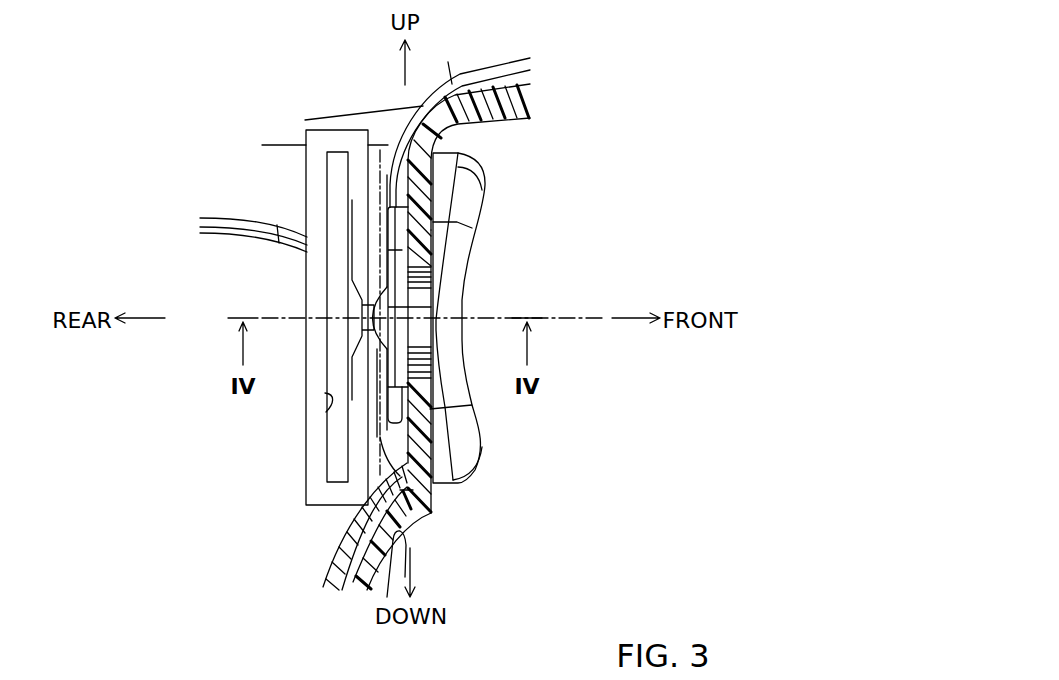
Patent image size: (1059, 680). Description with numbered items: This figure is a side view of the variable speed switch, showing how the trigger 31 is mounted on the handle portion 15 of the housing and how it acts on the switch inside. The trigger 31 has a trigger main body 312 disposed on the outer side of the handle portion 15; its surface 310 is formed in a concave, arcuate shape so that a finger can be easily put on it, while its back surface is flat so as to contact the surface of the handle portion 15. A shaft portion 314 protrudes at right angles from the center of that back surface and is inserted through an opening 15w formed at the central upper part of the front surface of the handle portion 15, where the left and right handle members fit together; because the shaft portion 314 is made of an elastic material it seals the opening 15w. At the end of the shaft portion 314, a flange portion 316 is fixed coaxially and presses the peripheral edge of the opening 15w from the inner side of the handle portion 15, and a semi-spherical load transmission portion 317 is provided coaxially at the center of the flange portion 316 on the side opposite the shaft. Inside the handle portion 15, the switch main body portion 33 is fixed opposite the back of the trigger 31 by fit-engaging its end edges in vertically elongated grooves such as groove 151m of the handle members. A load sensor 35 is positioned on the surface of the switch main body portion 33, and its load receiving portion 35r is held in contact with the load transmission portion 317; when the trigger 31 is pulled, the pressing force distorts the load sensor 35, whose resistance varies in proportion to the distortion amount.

The handle portion 15 is at (324, 601).
The opening 15w is at (433, 291).
The trigger 31 is at (519, 177).
The switch main body portion 33 is at (337, 222).
The load sensor 35 is at (361, 263).
The load receiving portion 35r is at (380, 285).
The longitudinally elongated groove 151m is at (326, 412).
The surface 310 is at (472, 397).
The trigger main body 312 is at (465, 443).
The shaft portion 314 is at (455, 483).
The flange portion 316 is at (434, 508).
The load transmission portion 317 is at (413, 533).